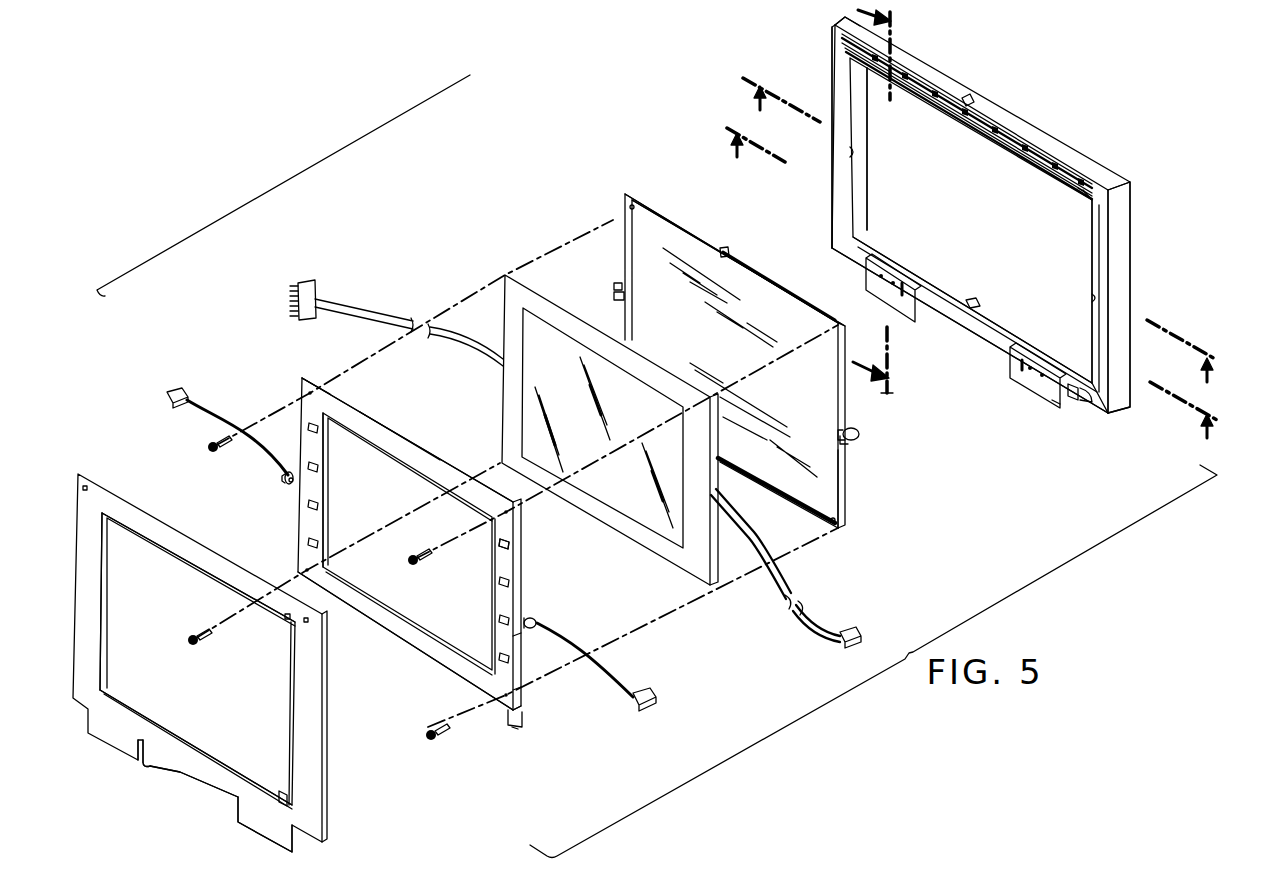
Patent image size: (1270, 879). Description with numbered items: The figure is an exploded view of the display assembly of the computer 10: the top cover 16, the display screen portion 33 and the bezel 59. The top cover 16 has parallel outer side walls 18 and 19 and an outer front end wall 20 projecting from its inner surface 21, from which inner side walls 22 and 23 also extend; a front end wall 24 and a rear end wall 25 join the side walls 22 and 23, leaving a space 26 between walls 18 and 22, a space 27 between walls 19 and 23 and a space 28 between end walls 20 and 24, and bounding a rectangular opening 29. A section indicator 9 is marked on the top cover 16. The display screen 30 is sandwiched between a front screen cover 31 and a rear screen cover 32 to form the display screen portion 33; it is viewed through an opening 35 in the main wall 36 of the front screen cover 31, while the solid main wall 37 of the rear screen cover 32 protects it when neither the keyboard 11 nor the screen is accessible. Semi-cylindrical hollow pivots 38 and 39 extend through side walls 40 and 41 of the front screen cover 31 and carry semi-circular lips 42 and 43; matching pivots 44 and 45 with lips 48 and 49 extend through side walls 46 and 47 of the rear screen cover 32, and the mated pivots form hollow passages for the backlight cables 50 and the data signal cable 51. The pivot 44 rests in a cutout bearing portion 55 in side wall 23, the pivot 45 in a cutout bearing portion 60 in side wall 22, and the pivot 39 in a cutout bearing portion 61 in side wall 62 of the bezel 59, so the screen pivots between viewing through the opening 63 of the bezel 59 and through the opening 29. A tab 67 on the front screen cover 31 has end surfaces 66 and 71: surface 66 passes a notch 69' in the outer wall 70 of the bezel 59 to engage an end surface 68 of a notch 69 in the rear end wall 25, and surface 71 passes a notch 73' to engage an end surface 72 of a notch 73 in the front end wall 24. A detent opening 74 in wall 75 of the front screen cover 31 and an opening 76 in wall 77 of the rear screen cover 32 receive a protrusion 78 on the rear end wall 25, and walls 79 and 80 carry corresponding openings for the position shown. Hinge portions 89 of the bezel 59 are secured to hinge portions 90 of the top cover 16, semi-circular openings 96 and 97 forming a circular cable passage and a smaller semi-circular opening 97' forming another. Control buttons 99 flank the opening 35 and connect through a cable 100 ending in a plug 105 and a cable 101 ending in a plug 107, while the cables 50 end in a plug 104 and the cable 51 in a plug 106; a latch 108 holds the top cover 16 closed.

The section line 9- 9 is at (967, 292).
The computer 10 is at (889, 201).
The keyboard 11 is at (977, 239).
The top cover 16 is at (1064, 139).
The outer side wall 18 is at (830, 208).
The outer side wall 19 is at (1127, 308).
The outer front end wall 20 is at (1030, 130).
The inner surface 21 is at (1099, 410).
The side wall 22 is at (860, 132).
The side wall 23 is at (1094, 318).
The front end wall 24 is at (1020, 157).
The rear end wall 25 is at (907, 260).
The space 26 is at (845, 78).
The space 27 is at (1102, 245).
The space 28 is at (933, 88).
The rectangular shaped opening 29 is at (863, 200).
The display screen 30 is at (625, 540).
The front screen cover 31 is at (530, 575).
The rear screen cover 32 is at (673, 208).
The display screen portion 33 is at (291, 178).
The rectangular shaped opening 35 is at (333, 498).
The main wall 36 is at (388, 623).
The solid main wall 37 is at (788, 396).
The semi-cylindrical hollow pivot 38 is at (525, 644).
The semi-cylindrical hollow pivot 39 is at (291, 485).
The side wall 40 is at (523, 693).
The side wall 41 is at (303, 378).
The semi-circular lip 42 is at (537, 623).
The semi-circular lip 43 is at (285, 478).
The semi-cylindrical hollow pivot 44 is at (850, 441).
The semi-cylindrical hollow pivot 45 is at (616, 298).
The side wall 46 is at (847, 498).
The side wall 47 is at (610, 225).
The semi-circular lip 48 is at (859, 432).
The semi-circular lip 49 is at (616, 285).
The backlight cables 50 is at (792, 586).
The data signal cable 51 is at (357, 317).
The cutout bearing portion 55 is at (1094, 298).
The bezel 59 is at (181, 772).
The cutout bearing portion 60 is at (851, 152).
The cutout bearing portion 61 is at (103, 603).
The side wall 62 is at (103, 573).
The opening 63 is at (103, 673).
The end surface 66 is at (523, 725).
The tab 67 is at (514, 730).
The end surface 68 is at (1082, 400).
The notch 69 is at (1041, 442).
The notch 69' is at (273, 765).
The outer wall 70 is at (217, 773).
The end surface 71 is at (500, 706).
The end surface 72 is at (1090, 198).
The notch 73 is at (1031, 197).
The notch 73' is at (260, 632).
The opening 74 is at (398, 432).
The wall 75 is at (343, 398).
The opening 76 is at (725, 252).
The wall 77 is at (783, 285).
The protrusion 78 is at (975, 302).
The wall 79 is at (527, 715).
The wall 80 is at (782, 494).
The hinge portions 89 is at (268, 827).
The hinge portion 90 is at (1033, 395).
The semi-circular opening 96 is at (150, 766).
The semi-circular opening 97 is at (939, 323).
The semi-circular opening 97' is at (1010, 440).
The control buttons 99 is at (510, 545).
The cable 100 is at (572, 648).
The cable 101 is at (217, 423).
The plug 104 is at (860, 630).
The plug 105 is at (656, 694).
The plug 106 is at (307, 282).
The plug 107 is at (170, 390).
The latch 108 is at (968, 103).